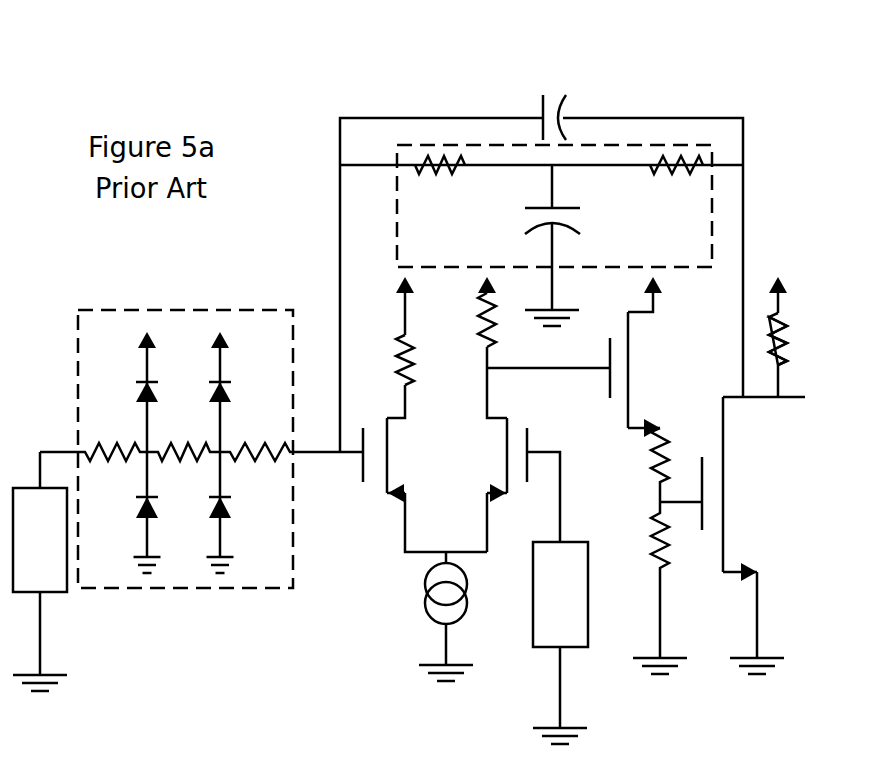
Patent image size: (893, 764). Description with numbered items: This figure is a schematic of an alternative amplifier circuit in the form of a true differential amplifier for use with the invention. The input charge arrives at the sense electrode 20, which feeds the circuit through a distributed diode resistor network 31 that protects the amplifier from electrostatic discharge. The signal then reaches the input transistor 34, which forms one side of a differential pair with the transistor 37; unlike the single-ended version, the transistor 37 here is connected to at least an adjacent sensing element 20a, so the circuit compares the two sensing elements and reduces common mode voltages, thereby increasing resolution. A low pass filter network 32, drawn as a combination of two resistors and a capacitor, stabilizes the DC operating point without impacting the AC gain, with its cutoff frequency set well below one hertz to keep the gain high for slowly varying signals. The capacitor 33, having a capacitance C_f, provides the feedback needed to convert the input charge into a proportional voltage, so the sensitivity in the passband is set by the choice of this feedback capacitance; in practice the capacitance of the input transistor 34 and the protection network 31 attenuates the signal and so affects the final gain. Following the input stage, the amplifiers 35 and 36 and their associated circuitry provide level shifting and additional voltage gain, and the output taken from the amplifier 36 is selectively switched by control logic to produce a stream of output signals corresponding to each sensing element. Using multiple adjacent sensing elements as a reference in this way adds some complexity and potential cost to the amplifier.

The sense electrode 20 is at (46, 584).
The adjacent sensing element 20a is at (567, 640).
The distributed diode resistor network 31 is at (120, 328).
The low pass filter network 32 is at (680, 223).
The capacitor 33 is at (553, 100).
The input transistor 34 is at (374, 453).
The amplifier 35 is at (617, 368).
The amplifier 36 is at (714, 497).
The transistor 37 is at (515, 458).